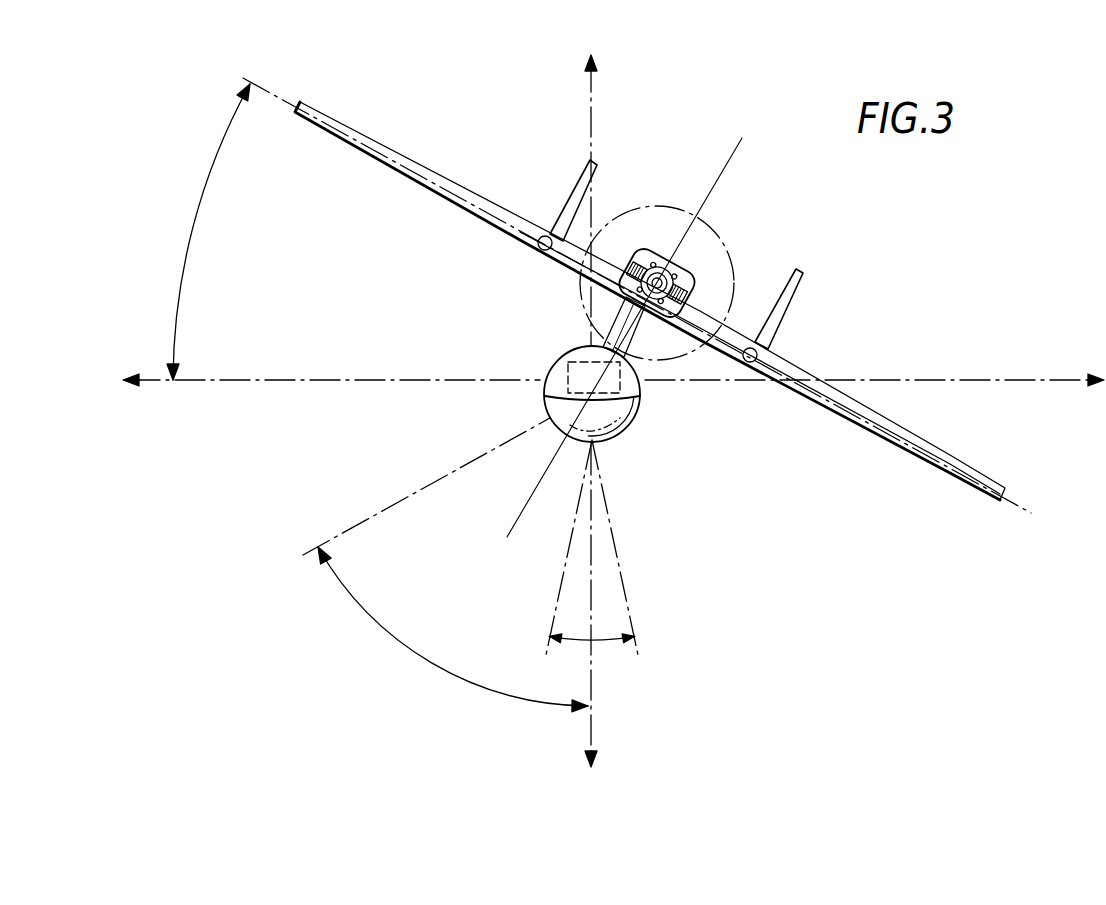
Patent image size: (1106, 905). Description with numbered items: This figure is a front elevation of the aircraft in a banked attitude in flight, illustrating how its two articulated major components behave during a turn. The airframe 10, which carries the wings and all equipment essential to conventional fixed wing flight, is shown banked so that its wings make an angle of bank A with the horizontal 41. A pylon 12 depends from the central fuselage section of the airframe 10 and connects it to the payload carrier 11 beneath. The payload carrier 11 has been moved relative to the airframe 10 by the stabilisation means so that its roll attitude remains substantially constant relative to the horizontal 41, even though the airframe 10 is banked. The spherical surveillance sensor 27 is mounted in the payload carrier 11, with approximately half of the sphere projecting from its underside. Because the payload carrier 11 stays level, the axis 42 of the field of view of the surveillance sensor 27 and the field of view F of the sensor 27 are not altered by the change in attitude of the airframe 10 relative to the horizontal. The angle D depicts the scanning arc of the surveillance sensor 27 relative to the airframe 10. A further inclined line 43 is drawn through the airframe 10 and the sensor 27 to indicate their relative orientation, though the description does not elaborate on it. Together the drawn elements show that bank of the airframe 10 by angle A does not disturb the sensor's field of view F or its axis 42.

The airframe 10 is at (716, 261).
The payload carrier 11 is at (549, 363).
The pylon 12 is at (629, 343).
The spherical surveillance sensor 27 is at (619, 421).
The horizontal 41 is at (320, 381).
The axis of the field of view 42 is at (594, 699).
The engine axis 43 is at (709, 197).
The angle of bank A is at (190, 226).
The scanning arc D is at (438, 668).
The field of view F is at (596, 647).